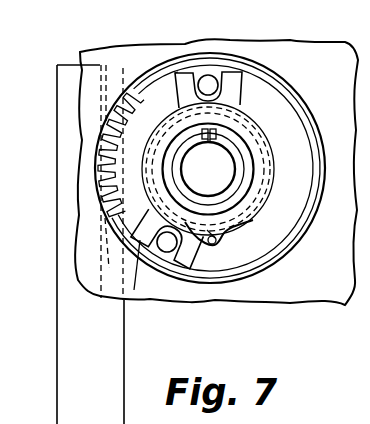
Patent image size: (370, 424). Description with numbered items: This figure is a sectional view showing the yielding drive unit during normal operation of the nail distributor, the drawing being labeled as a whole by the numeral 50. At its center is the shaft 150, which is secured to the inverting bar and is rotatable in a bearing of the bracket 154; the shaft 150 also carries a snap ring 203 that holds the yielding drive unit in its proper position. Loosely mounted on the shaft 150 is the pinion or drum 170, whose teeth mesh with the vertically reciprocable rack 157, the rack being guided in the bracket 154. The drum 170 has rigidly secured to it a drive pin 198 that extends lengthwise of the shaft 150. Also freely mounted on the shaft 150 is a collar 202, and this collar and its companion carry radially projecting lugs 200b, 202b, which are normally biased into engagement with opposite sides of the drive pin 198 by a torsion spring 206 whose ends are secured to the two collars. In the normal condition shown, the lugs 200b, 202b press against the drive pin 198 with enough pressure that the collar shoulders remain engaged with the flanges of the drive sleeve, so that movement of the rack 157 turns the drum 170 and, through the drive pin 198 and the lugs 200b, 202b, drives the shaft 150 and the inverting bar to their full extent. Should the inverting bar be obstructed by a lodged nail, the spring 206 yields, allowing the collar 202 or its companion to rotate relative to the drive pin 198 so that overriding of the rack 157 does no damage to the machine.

The machine assembly 50 is at (16, 11).
The shaft 150 is at (235, 173).
The bracket 154 is at (315, 298).
The rack 157 is at (56, 329).
The pinion or drum 170 is at (122, 156).
The drive pin 198 is at (214, 74).
The lug 200b is at (178, 72).
The collar 202 is at (263, 128).
The lug 202b is at (238, 73).
The snap ring 203 is at (238, 190).
The torsion spring 206 is at (289, 231).